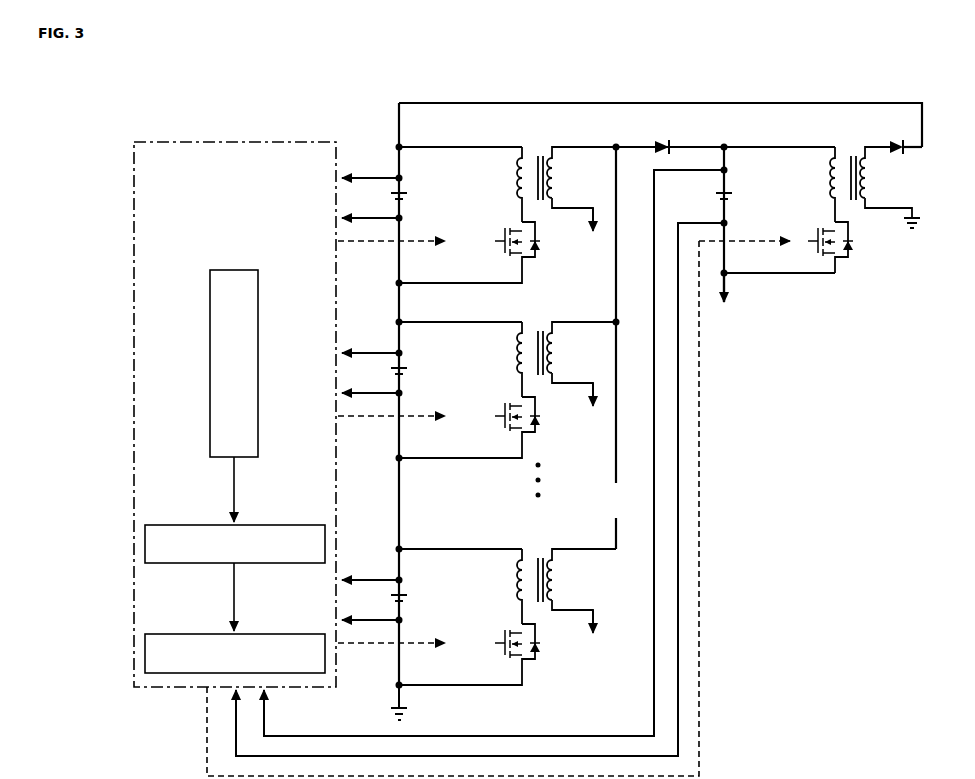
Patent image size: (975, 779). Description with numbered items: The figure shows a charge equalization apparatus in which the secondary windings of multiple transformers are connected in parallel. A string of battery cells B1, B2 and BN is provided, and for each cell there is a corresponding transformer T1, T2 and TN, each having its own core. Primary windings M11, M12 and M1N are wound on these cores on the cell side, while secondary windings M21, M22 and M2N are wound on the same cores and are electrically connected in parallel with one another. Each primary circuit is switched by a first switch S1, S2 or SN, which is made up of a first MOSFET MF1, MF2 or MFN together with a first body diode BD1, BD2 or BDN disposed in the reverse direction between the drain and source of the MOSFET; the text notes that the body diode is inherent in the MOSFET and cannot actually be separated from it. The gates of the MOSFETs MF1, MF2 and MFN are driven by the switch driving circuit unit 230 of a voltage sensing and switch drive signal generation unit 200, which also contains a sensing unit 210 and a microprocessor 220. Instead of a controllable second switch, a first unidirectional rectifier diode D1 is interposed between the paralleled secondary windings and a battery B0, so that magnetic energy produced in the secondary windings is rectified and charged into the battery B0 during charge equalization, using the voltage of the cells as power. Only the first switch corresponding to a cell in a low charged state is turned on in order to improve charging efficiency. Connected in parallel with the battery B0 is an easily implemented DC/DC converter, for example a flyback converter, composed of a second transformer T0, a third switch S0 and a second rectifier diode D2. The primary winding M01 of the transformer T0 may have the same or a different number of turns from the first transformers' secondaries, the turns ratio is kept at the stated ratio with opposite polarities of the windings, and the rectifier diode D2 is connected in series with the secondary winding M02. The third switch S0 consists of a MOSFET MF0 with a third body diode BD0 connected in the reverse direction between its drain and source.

The voltage sensing and switch drive signal generation unit 200 is at (235, 142).
The sensing unit 210 is at (210, 371).
The microprocessor 220 is at (145, 546).
The switch driving circuit unit 230 is at (145, 656).
The battery cell B1 is at (387, 198).
The battery cell B2 is at (387, 373).
The battery cell BN is at (386, 600).
The battery B0 is at (737, 223).
The transformer T1 is at (550, 169).
The transformer T2 is at (550, 344).
The transformer TN is at (550, 571).
The second transformer T0 is at (859, 166).
The primary winding M11 is at (503, 184).
The secondary winding M21 is at (581, 189).
The primary winding M12 is at (503, 359).
The secondary winding M22 is at (581, 364).
The primary winding M1N is at (503, 586).
The secondary winding M2N is at (581, 591).
The primary winding of the second transformer M01 is at (816, 184).
The secondary winding of the second transformer M02 is at (890, 187).
The first switch S1 is at (486, 252).
The first switch S2 is at (486, 427).
The first switch SN is at (487, 654).
The third switch S0 is at (829, 264).
The first MOSFET MF1 is at (503, 254).
The first MOSFET MF2 is at (491, 427).
The first MOSFET MFN is at (490, 654).
The MOSFET MF0 is at (816, 254).
The first body diode BD1 is at (538, 252).
The first body diode BD2 is at (551, 434).
The first body diode BDN is at (552, 661).
The third body diode BD0 is at (850, 252).
The first unidirectional rectifier diode D1 is at (670, 136).
The second rectifier diode D2 is at (906, 137).